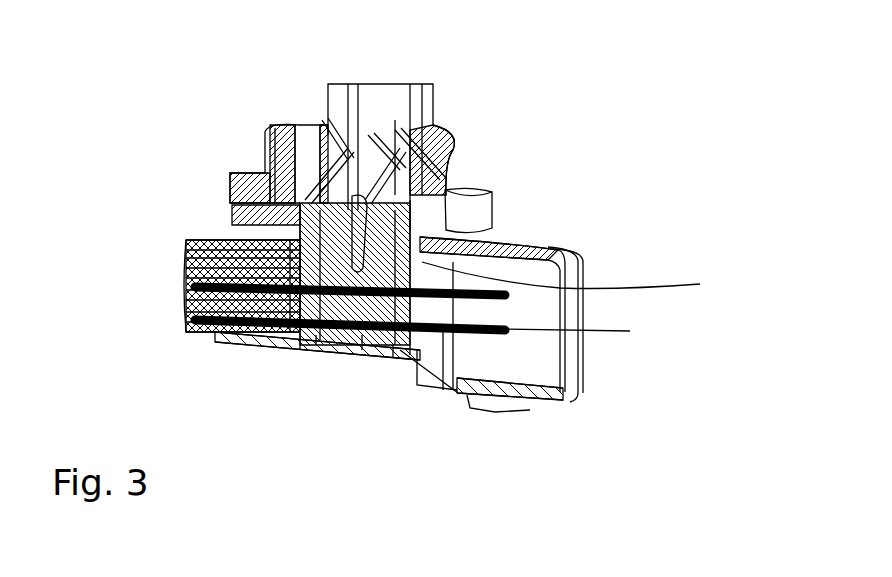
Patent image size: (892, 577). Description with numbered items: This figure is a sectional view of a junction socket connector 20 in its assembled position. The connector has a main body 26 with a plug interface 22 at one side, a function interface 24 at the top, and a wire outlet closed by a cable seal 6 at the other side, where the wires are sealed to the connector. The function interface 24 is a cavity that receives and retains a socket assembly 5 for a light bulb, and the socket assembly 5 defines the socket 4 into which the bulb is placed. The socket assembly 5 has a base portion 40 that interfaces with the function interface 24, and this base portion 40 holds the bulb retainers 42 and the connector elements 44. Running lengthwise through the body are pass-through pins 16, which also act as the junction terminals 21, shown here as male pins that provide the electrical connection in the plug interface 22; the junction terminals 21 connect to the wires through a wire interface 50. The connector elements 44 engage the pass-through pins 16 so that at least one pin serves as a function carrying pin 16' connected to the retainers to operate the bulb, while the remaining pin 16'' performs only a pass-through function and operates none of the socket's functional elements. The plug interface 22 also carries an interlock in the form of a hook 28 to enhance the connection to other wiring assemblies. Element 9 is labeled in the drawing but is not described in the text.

The junction socket connector 20 is at (640, 152).
The socket 4 is at (392, 102).
The base portion 40 is at (268, 137).
The connector elements 44 is at (345, 152).
The function interface 24 is at (457, 190).
The bulb retainers 42 is at (297, 237).
The function carrying pin 16' is at (216, 272).
The sleeve end 9 is at (188, 328).
The cable seal 6 is at (216, 338).
The wire interface 50 is at (262, 340).
The junction terminals 21 is at (335, 390).
The socket assembly 5 is at (569, 279).
The pass-through pins 16 is at (338, 418).
The main body 26 is at (394, 360).
The pass-through pin 16'' is at (484, 378).
The plug interface 22 is at (530, 363).
The hook 28 is at (527, 408).